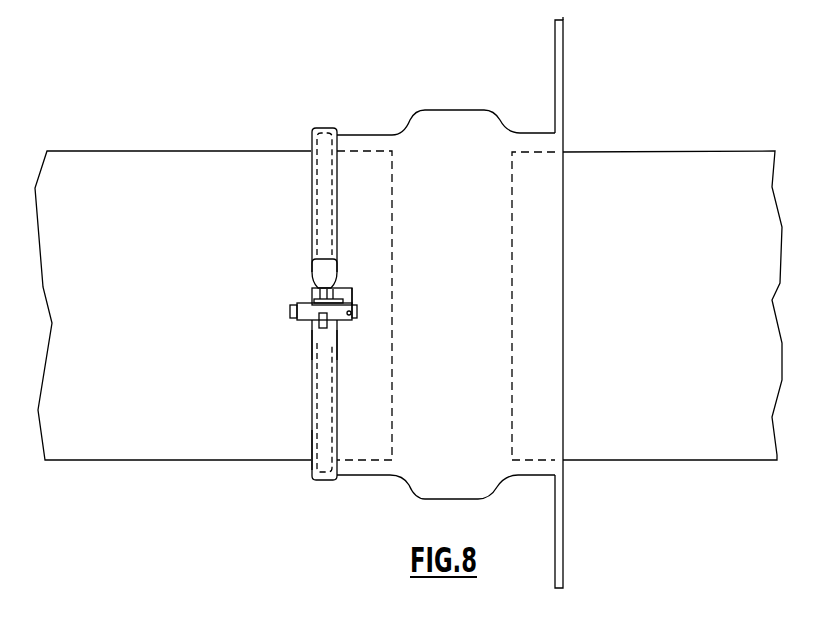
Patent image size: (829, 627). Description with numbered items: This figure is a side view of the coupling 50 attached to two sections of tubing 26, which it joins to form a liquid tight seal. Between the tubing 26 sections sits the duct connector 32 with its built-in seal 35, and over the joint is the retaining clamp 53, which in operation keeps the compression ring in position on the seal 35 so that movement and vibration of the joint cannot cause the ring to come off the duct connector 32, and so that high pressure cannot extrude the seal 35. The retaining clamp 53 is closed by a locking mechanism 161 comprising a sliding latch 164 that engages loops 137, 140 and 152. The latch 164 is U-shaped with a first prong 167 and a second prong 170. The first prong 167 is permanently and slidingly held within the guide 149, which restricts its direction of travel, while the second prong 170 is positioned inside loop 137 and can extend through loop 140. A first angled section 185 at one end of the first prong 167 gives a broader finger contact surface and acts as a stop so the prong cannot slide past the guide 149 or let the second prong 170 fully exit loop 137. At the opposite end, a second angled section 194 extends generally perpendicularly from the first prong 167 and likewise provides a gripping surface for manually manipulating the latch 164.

The tubing 26 is at (103, 450).
The duct connector 32 is at (455, 118).
The seal 35 is at (322, 445).
The coupling 50 is at (360, 79).
The retaining clamp 53 is at (321, 123).
The loop 137 is at (312, 296).
The loop 140 is at (335, 287).
The guide 149 is at (327, 323).
The loop 152 is at (313, 288).
The locking mechanism 161 is at (238, 272).
The sliding latch 164 is at (293, 344).
The first prong 167 is at (303, 312).
The second prong 170 is at (350, 293).
The first angled section 185 is at (288, 317).
The second angled section 194 is at (358, 312).